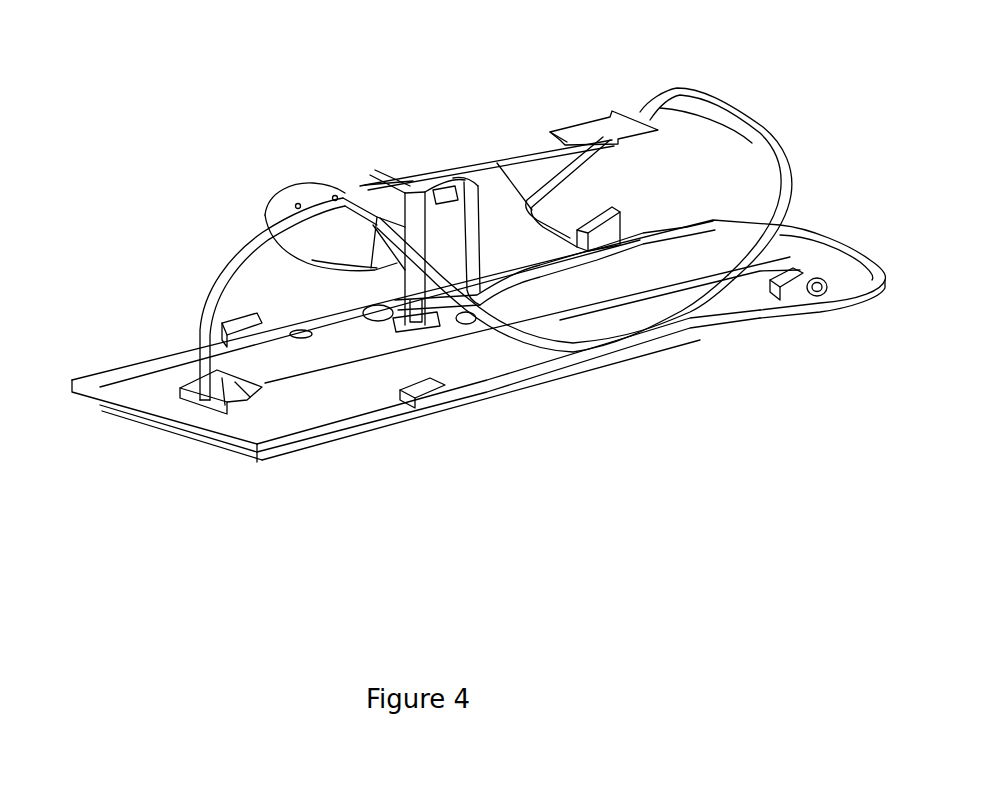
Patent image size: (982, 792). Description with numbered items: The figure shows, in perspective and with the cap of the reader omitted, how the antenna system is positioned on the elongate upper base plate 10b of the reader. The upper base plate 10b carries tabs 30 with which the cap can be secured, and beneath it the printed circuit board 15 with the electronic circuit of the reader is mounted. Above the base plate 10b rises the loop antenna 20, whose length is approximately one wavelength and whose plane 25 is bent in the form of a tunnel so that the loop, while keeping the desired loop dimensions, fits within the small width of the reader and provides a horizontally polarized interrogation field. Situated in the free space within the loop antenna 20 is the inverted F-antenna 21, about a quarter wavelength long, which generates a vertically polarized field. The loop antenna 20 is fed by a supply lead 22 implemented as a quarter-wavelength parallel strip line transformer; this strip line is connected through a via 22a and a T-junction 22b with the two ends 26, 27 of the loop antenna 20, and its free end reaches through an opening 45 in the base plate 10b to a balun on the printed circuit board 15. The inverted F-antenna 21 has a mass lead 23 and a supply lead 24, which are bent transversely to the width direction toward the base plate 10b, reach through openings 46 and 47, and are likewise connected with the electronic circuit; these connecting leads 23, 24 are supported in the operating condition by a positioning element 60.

The upper base plate 10b is at (538, 350).
The printed circuit board 15 is at (205, 443).
The loop antenna 20 is at (775, 137).
The inverted F-antenna 21 is at (617, 127).
The supply lead 22 is at (212, 280).
The via 22a is at (337, 197).
The T-junction 22b is at (298, 205).
The mass lead 23 is at (418, 317).
The supply lead 24 is at (467, 203).
The plane 25 is at (723, 133).
The end of the loop antenna 26 is at (330, 203).
The end of the loop antenna 27 is at (348, 201).
The tabs 30 is at (418, 387).
The opening 45 is at (230, 397).
The opening 46 is at (395, 315).
The opening 47 is at (462, 318).
The positioning element 60 is at (552, 250).